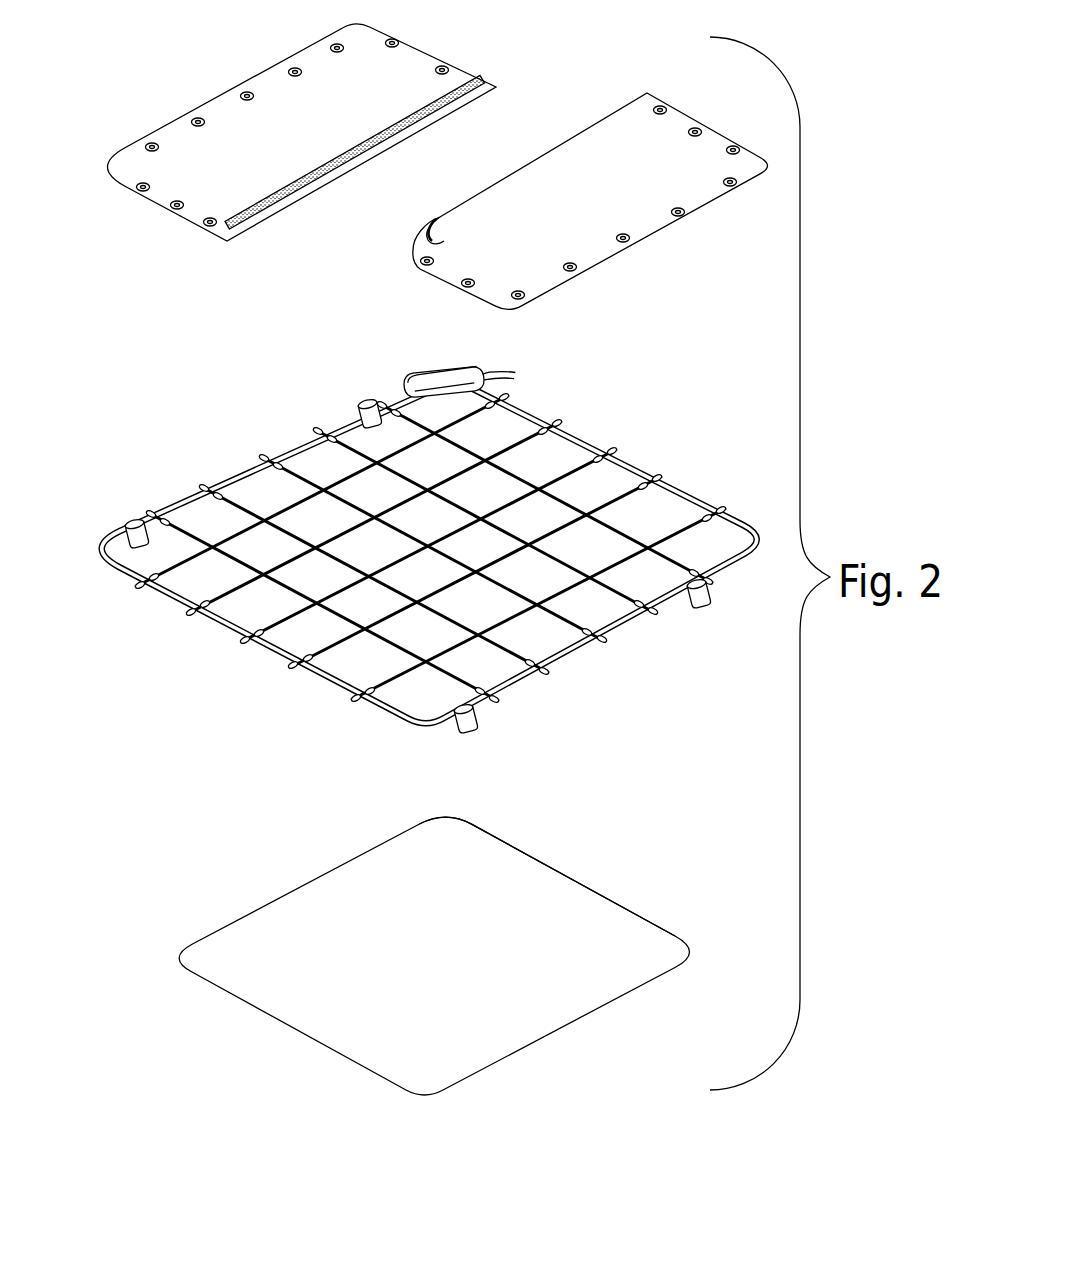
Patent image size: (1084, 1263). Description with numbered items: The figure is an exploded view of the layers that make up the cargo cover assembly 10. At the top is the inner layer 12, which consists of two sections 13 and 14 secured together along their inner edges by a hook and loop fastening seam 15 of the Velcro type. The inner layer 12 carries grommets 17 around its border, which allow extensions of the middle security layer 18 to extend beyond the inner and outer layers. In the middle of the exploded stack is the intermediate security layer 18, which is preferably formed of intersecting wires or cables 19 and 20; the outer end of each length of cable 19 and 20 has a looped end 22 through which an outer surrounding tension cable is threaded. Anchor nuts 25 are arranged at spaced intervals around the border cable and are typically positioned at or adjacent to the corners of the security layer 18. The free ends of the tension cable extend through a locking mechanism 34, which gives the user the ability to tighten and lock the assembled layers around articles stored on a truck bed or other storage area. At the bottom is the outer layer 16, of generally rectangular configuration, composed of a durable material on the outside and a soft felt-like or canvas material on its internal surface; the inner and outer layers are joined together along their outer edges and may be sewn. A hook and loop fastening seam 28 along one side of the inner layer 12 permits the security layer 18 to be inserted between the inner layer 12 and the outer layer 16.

The cover assembly 10 is at (170, 443).
The inner layer 12 is at (553, 70).
The section 13 is at (423, 50).
The section 14 is at (687, 115).
The hook and loop fastening seam 15 is at (272, 208).
The outer layer 16 is at (593, 890).
The grommets 17 is at (247, 93).
The security layer 18 is at (580, 433).
The wires or cables 19 is at (350, 452).
The wires or cables 20 is at (338, 640).
The looped end 22 is at (263, 457).
The anchor nuts 25 is at (363, 398).
The hook and loop fastening seam 28 is at (323, 877).
The locking mechanism 34 is at (432, 370).